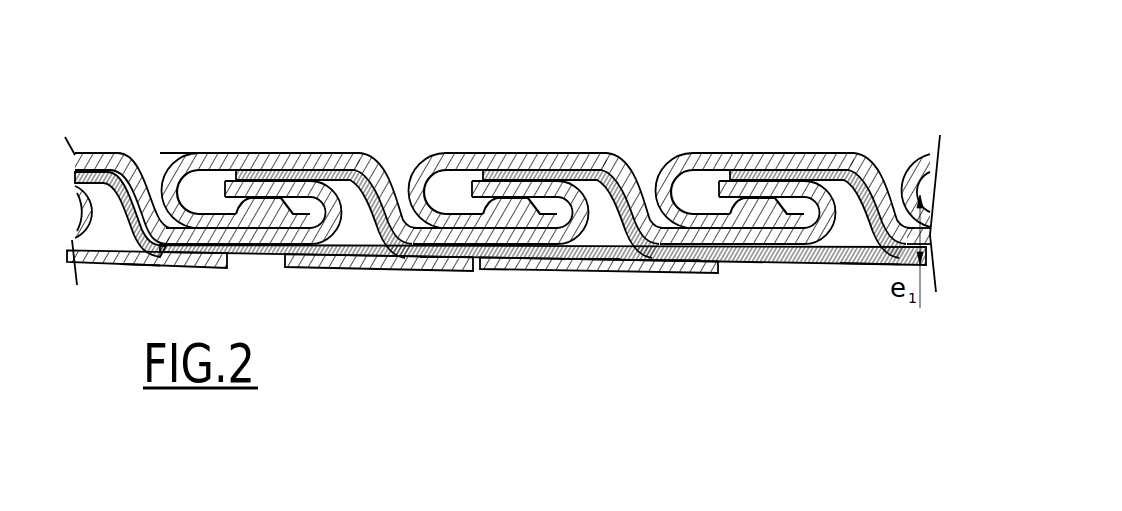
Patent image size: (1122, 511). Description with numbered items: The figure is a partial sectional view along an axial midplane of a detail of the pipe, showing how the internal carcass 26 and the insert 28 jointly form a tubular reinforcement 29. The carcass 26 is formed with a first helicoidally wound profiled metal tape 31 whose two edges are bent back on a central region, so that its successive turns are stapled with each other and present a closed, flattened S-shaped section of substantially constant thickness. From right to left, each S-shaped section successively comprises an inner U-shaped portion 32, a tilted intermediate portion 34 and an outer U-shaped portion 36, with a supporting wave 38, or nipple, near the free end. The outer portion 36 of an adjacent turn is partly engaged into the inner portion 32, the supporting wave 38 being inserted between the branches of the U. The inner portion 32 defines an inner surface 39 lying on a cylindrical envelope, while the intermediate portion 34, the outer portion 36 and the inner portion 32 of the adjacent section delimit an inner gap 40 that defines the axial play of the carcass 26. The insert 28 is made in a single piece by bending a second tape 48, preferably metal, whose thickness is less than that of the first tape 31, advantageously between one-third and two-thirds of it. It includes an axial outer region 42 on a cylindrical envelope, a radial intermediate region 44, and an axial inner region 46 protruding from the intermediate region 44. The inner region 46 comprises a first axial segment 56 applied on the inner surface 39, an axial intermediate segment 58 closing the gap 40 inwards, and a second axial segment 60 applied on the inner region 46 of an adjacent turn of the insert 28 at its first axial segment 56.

The internal carcass 26 is at (171, 129).
The insert 28 is at (152, 283).
The tubular reinforcement 29 is at (578, 88).
The first helicoidally wound profiled metal tape 31 is at (826, 140).
The inner U-shaped portion 32 is at (519, 250).
The tilted intermediate portion 34 is at (392, 190).
The outer U-shaped portion 36 is at (255, 155).
The supporting wave 38 is at (266, 212).
The inner surface 39 is at (512, 240).
The inner gap 40 is at (596, 208).
The axial outer region 42 is at (306, 172).
The radial intermediate region 44 is at (368, 172).
The axial inner region 46 is at (466, 272).
The second tape 48 is at (857, 283).
The first axial segment 56 is at (437, 268).
The axial intermediate segment 58 is at (588, 254).
The second axial segment 60 is at (678, 254).